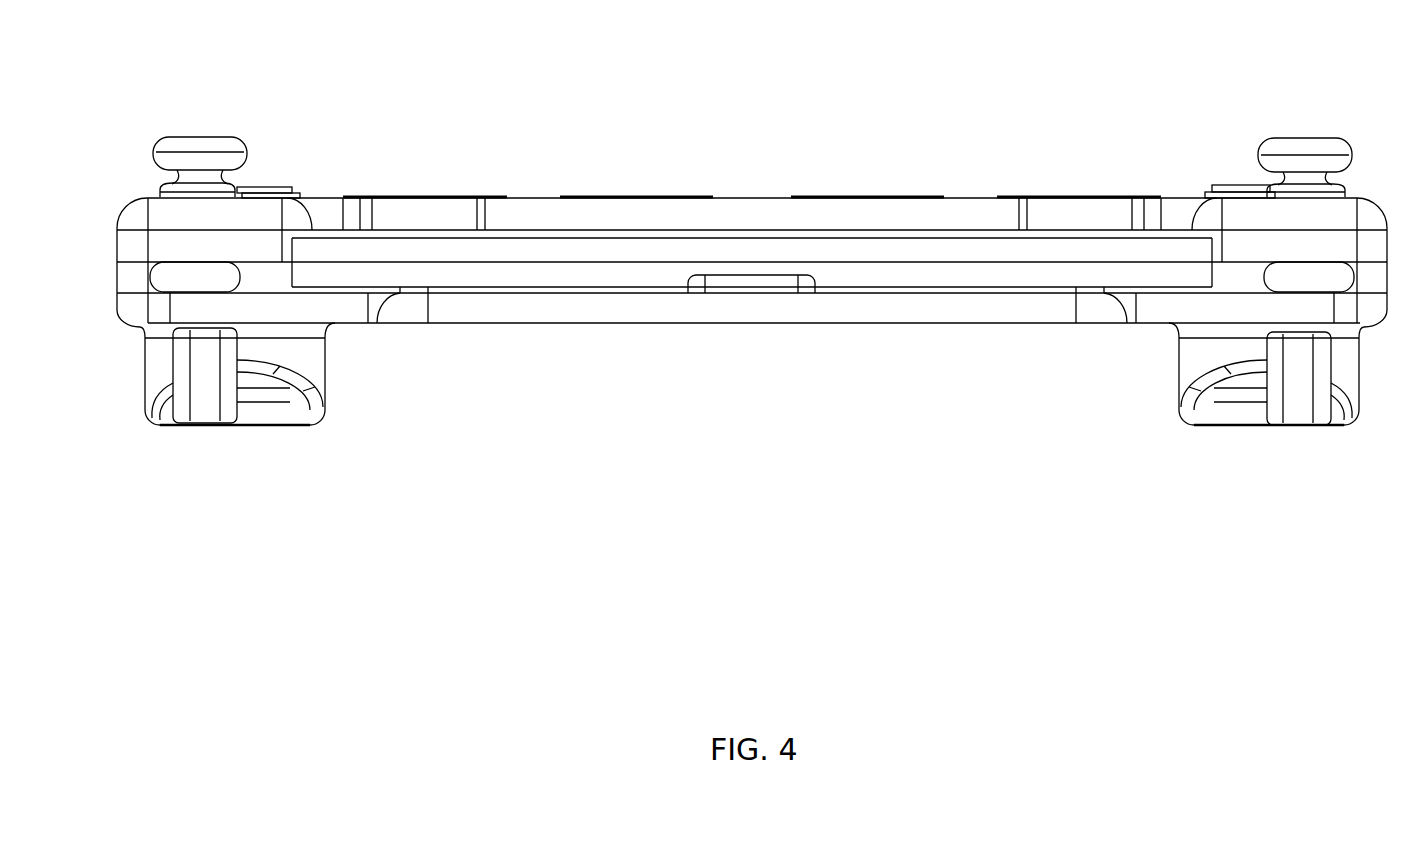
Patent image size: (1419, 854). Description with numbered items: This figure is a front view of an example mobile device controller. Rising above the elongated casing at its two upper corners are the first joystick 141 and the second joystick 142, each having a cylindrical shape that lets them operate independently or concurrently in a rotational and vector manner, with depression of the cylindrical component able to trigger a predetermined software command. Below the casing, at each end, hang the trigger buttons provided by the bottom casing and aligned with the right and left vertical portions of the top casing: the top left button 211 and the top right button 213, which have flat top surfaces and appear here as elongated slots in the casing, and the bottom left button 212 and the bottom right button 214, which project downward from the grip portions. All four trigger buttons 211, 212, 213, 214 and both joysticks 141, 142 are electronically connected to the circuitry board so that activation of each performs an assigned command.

The first joystick 141 is at (1323, 157).
The second joystick 142 is at (158, 152).
The top left button 211 is at (1283, 280).
The bottom left button 212 is at (1300, 400).
The top right button 213 is at (225, 273).
The bottom right button 214 is at (207, 397).